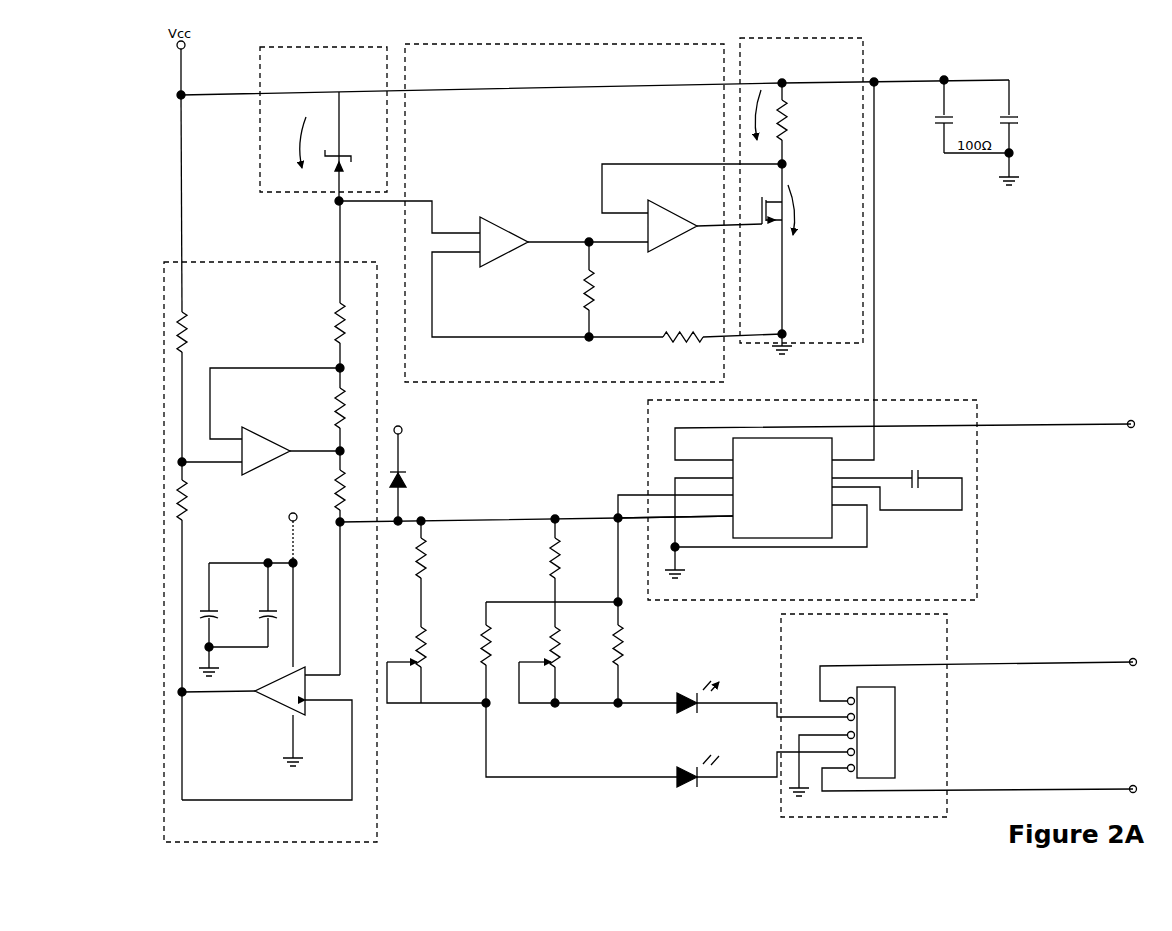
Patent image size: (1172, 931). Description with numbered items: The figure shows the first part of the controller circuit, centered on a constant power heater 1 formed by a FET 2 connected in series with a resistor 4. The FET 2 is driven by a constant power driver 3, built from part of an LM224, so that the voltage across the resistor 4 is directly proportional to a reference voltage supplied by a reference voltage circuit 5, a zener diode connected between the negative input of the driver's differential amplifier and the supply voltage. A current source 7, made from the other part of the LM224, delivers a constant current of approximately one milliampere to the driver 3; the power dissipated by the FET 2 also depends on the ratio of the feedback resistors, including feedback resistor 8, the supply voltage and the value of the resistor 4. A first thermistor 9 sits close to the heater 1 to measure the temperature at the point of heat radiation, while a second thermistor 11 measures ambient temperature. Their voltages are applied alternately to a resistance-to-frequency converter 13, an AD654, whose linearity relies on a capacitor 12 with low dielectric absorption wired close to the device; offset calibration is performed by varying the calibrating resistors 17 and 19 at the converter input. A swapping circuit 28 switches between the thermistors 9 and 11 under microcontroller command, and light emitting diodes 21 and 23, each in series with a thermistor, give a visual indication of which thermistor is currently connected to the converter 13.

The constant power heater 1 is at (836, 177).
The FET 2 is at (772, 227).
The constant power driver 3 is at (593, 212).
The resistor 4 is at (787, 127).
The reference voltage circuit 5 is at (288, 70).
The current source 7 is at (240, 818).
The feedback resistor 8 is at (668, 350).
The first thermistor 9 is at (475, 652).
The second thermistor 11 is at (610, 658).
The capacitor 12 is at (916, 490).
The resistance-to-frequency converter 13 is at (883, 622).
The calibrating resistor 17 is at (415, 672).
The calibrating resistor 19 is at (545, 667).
The light emitting diode 21 is at (699, 709).
The light emitting diode 23 is at (665, 785).
The swapping circuit 28 is at (858, 795).